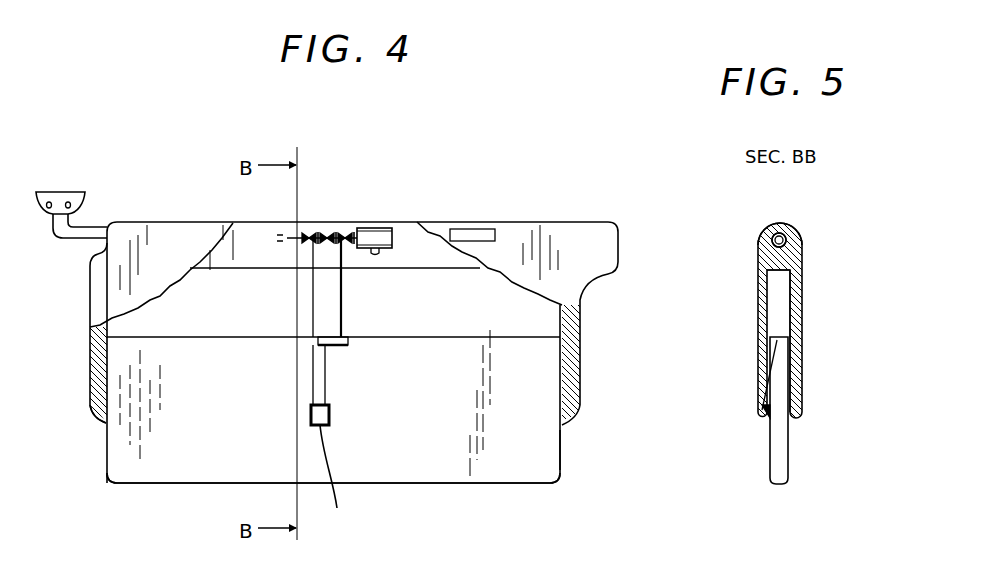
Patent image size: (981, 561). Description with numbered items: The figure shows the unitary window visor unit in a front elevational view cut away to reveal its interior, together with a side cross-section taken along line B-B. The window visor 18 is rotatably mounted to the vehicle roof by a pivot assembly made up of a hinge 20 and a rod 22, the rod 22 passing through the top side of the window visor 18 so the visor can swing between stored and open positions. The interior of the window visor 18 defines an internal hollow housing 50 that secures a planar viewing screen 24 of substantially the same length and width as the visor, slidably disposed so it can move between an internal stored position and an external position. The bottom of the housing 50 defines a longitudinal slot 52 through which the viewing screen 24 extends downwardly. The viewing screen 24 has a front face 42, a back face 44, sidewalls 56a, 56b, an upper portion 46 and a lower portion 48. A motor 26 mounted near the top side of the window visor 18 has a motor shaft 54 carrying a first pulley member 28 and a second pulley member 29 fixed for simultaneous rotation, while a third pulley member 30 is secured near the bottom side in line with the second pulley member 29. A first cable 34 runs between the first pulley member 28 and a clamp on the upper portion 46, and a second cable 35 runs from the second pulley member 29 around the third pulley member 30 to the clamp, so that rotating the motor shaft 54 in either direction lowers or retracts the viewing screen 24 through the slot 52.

In FIG. 4, the window visor 18 is at (590, 298).
In FIG. 5, the window visor 18 is at (758, 296).
In FIG. 4, the hinge 20 is at (60, 190).
In FIG. 4, the rod 22 is at (93, 228).
In FIG. 4, the viewing screen 24 is at (455, 410).
In FIG. 5, the viewing screen 24 is at (776, 466).
In FIG. 4, the motor 26 is at (380, 228).
In FIG. 5, the motor 26 is at (778, 232).
In FIG. 4, the first pulley member 28 is at (344, 236).
In FIG. 5, the first pulley member 28 is at (800, 240).
In FIG. 4, the second pulley member 29 is at (318, 236).
In FIG. 4, the third pulley member 30 is at (336, 486).
In FIG. 5, the third pulley member 30 is at (797, 262).
In FIG. 4, the first cable 34 is at (345, 298).
In FIG. 4, the second cable 35 is at (313, 302).
In FIG. 4, the front face 42 is at (545, 442).
In FIG. 4, the back face 44 is at (132, 485).
In FIG. 4, the upper portion 46 is at (440, 337).
In FIG. 4, the lower portion 48 is at (530, 484).
In FIG. 5, the housing 50 is at (797, 306).
In FIG. 4, the longitudinal slot 52 is at (102, 424).
In FIG. 5, the longitudinal slot 52 is at (766, 420).
In FIG. 4, the motor shaft 54 is at (334, 236).
In FIG. 4, the sidewall 56a is at (104, 466).
In FIG. 4, the sidewall 56b is at (560, 468).